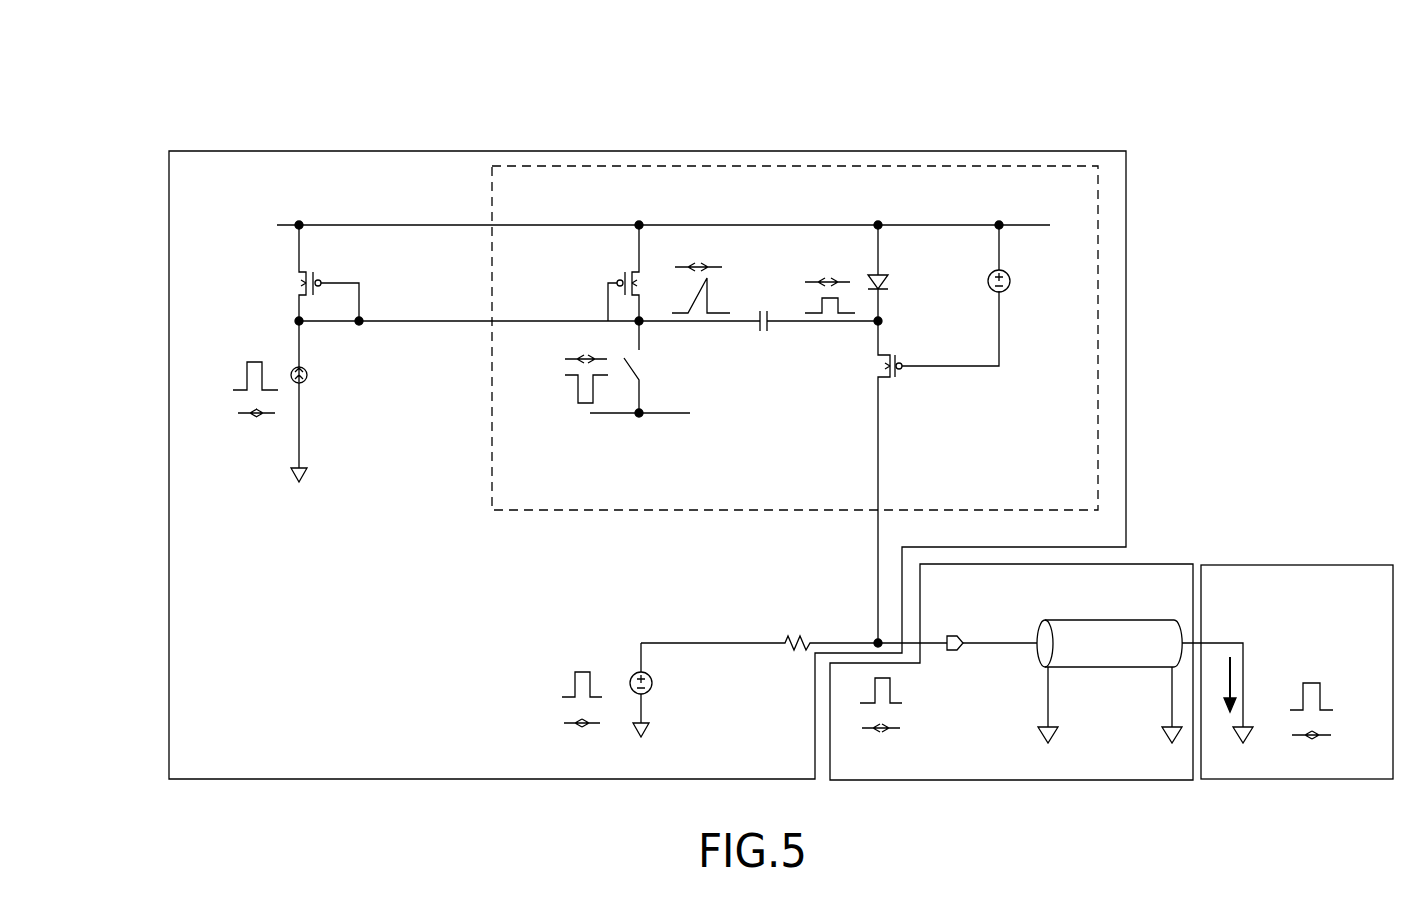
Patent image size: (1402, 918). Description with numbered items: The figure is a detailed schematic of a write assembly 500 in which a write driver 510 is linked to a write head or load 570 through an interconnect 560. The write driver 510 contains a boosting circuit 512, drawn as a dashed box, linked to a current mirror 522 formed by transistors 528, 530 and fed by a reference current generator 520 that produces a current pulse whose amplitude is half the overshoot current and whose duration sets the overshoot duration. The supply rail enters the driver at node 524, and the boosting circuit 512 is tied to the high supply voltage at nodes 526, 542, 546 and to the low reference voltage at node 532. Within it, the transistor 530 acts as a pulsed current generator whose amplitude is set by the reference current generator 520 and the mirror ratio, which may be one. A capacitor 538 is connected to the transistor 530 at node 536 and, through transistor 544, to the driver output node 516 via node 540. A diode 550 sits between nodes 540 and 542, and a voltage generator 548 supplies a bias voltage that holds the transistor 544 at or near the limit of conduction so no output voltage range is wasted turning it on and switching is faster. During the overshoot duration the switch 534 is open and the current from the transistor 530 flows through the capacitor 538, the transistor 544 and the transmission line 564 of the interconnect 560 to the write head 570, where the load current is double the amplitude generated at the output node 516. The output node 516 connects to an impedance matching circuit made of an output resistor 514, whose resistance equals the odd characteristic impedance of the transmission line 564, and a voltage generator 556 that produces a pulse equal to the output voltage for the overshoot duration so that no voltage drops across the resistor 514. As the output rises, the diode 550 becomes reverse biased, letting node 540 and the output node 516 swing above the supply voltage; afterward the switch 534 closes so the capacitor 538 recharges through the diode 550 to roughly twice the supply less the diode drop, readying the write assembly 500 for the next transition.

The write assembly 500 is at (305, 113).
The write driver 510 is at (533, 150).
The boosting circuit 512 is at (857, 166).
The output resistor 514 is at (778, 638).
The driver output node 516 is at (877, 640).
The reference current generator 520 is at (337, 395).
The current mirror 522 is at (437, 265).
The VCC supply node 524 is at (301, 223).
The supply voltage node 526 is at (639, 222).
The transistor 528 is at (293, 283).
The transistor 530 is at (617, 281).
The low reference voltage node 532 is at (637, 416).
The switch 534 is at (669, 378).
The node 536 is at (642, 323).
The capacitor 538 is at (763, 309).
The node 540 is at (877, 325).
The supply voltage node 542 is at (881, 223).
The transistor 544 is at (898, 375).
The supply voltage node 546 is at (1001, 223).
The voltage generator 548 is at (1008, 289).
The diode 550 is at (889, 280).
The voltage generator 556 is at (653, 691).
The interconnect 560 is at (1164, 564).
The transmission line 564 is at (1165, 618).
The write head 570 is at (1318, 564).